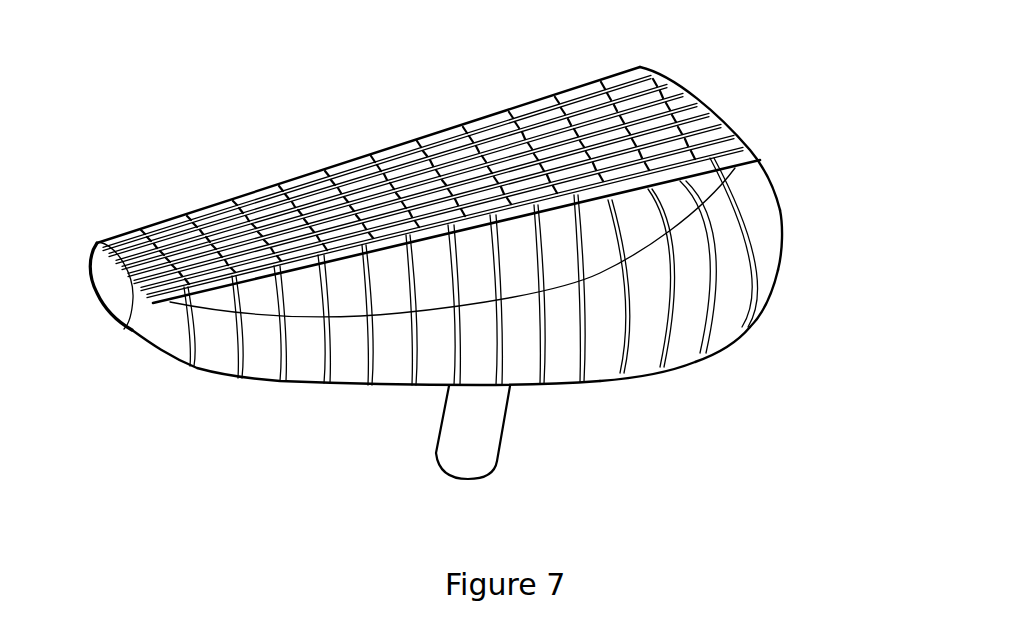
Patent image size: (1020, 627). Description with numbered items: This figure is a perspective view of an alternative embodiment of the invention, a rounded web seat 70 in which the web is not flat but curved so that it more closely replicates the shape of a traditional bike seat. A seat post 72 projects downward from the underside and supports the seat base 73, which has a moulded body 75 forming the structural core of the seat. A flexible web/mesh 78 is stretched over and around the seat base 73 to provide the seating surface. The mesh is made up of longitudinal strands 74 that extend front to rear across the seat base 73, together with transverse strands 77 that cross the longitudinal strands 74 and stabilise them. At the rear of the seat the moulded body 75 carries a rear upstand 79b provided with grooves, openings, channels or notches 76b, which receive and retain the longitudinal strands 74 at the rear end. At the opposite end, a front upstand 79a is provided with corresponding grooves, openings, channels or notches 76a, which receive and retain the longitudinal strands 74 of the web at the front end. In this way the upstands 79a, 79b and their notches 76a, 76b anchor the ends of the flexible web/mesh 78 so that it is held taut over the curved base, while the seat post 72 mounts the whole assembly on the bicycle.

The rounded web seat 70 is at (650, 390).
The seat post 72 is at (493, 477).
The seat base 73 is at (267, 380).
The longitudinal strands 74 is at (507, 217).
The moulded body 75 is at (768, 278).
The grooves, openings, channels or notches 76a is at (92, 250).
The grooves, openings, channels or notches 76b is at (712, 100).
The transverse strands 77 is at (700, 357).
The flexible web/mesh 78 is at (262, 188).
The front upstand 79a is at (160, 331).
The rear upstand 79b is at (782, 207).